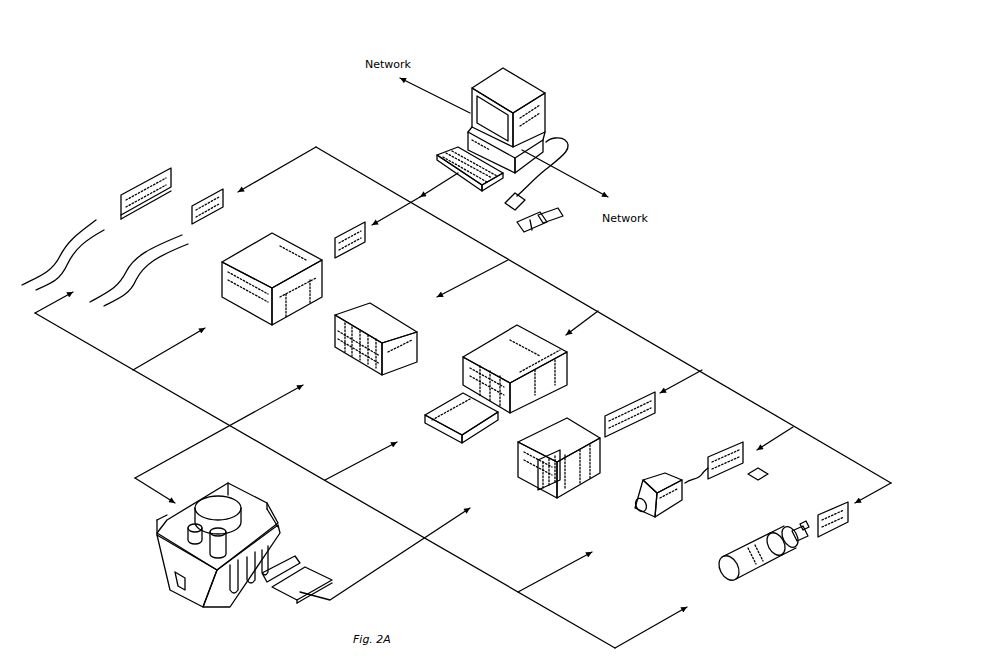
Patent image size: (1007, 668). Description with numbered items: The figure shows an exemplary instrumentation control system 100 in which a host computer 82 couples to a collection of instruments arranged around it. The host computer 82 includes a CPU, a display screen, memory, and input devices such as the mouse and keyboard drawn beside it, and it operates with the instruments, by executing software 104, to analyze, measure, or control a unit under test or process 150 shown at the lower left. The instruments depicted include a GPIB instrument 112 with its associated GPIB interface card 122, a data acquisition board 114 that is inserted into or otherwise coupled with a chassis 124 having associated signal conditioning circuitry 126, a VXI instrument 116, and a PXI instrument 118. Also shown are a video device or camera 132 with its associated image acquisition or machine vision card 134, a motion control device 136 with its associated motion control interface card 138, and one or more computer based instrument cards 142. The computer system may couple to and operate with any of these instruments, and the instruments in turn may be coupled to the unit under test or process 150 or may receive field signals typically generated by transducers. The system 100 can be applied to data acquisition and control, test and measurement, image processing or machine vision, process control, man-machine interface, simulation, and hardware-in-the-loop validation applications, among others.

The host computer 82 is at (522, 84).
The instrumentation control system 100 is at (715, 173).
The software 104 is at (540, 237).
The GPIB instrument 112 is at (248, 257).
The data acquisition board 114 is at (650, 390).
The VXI instrument 116 is at (492, 349).
The PXI instrument 118 is at (382, 318).
The GPIB interface card 122 is at (341, 227).
The chassis 124 is at (538, 484).
The signal conditioning circuitry 126 is at (537, 483).
The video device or camera 132 is at (660, 513).
The image acquisition card 134 is at (723, 455).
The motion control device 136 is at (757, 567).
The motion control interface card 138 is at (838, 530).
The computer based instrument cards 142 is at (132, 190).
The unit under test or process 150 is at (167, 555).